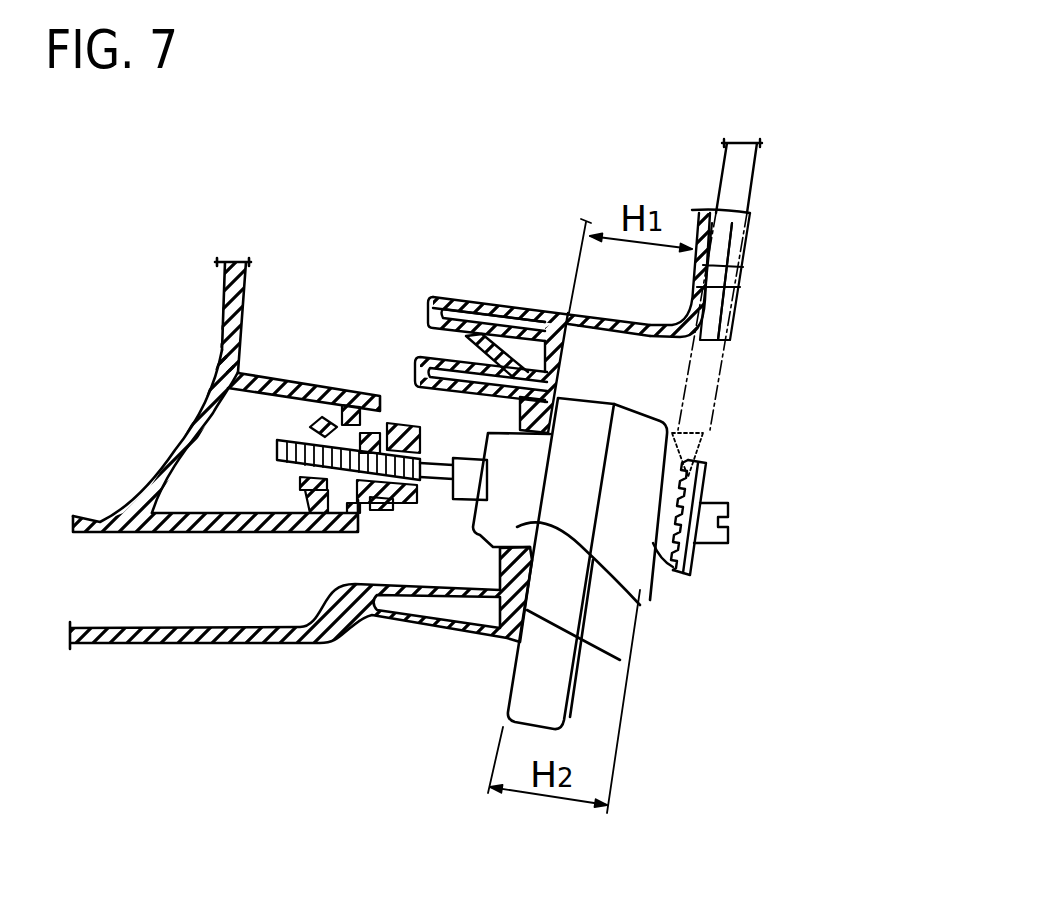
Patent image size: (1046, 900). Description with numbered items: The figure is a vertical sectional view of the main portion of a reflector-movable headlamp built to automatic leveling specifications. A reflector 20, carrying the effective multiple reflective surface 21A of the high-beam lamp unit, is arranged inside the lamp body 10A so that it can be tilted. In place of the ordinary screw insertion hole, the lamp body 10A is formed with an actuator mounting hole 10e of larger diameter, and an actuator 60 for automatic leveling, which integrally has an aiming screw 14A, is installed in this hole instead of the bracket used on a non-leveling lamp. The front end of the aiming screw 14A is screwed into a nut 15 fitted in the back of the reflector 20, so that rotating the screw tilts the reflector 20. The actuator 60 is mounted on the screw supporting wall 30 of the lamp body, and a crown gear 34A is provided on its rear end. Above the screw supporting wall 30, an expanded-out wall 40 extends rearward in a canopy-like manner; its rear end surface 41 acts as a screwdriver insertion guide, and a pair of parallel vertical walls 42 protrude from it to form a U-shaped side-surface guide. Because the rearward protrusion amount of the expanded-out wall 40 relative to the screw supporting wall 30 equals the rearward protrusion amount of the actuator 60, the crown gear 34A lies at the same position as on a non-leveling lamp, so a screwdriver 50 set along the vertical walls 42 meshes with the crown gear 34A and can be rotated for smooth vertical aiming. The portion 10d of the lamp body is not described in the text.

The reflector 20 is at (247, 320).
The effective multiple reflective surface 21A is at (197, 403).
The lamp body 10A is at (140, 628).
The finned frame portion 10d is at (520, 333).
The actuator mounting hole 10e is at (640, 605).
The screw supporting wall 30 is at (580, 633).
The crown gear 34A is at (683, 577).
The expanded-out wall 40 is at (702, 290).
The rear end surface 41 is at (745, 280).
The vertical walls 42 is at (748, 228).
The screwdriver 50 is at (763, 170).
The actuator for automatic leveling 60 is at (676, 433).
The nut 15 is at (332, 476).
The aiming screw 14A is at (415, 498).